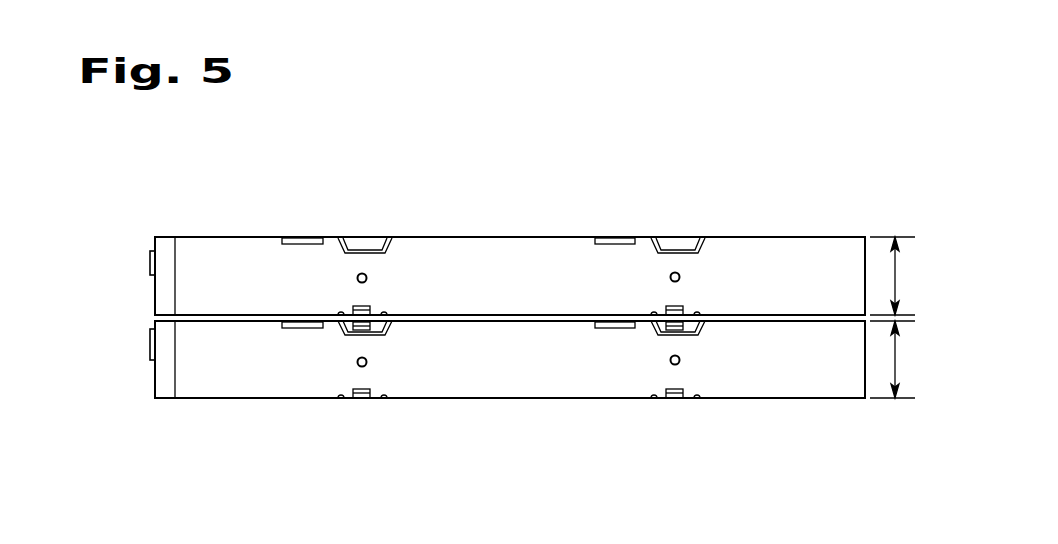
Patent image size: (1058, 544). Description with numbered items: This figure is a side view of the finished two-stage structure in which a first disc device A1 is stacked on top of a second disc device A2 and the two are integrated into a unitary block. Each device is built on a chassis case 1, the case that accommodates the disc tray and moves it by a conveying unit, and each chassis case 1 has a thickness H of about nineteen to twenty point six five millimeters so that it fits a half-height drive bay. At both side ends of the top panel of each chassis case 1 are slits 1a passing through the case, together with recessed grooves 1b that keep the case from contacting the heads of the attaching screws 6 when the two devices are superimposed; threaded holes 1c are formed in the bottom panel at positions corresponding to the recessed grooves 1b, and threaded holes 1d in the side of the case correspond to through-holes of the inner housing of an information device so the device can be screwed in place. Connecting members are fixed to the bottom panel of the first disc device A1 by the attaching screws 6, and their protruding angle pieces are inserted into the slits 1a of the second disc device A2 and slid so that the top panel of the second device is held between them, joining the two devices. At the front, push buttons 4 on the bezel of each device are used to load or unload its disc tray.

The chassis case 1 is at (529, 238).
The slits 1a is at (301, 238).
The recessed grooves 1b is at (365, 240).
The threaded holes 1c is at (352, 310).
The threaded holes 1d is at (369, 278).
The push buttons 4 is at (150, 268).
The attaching screws 6 is at (372, 330).
The first disc device A1 is at (738, 229).
The second disc device A2 is at (772, 409).
The thickness H is at (896, 317).